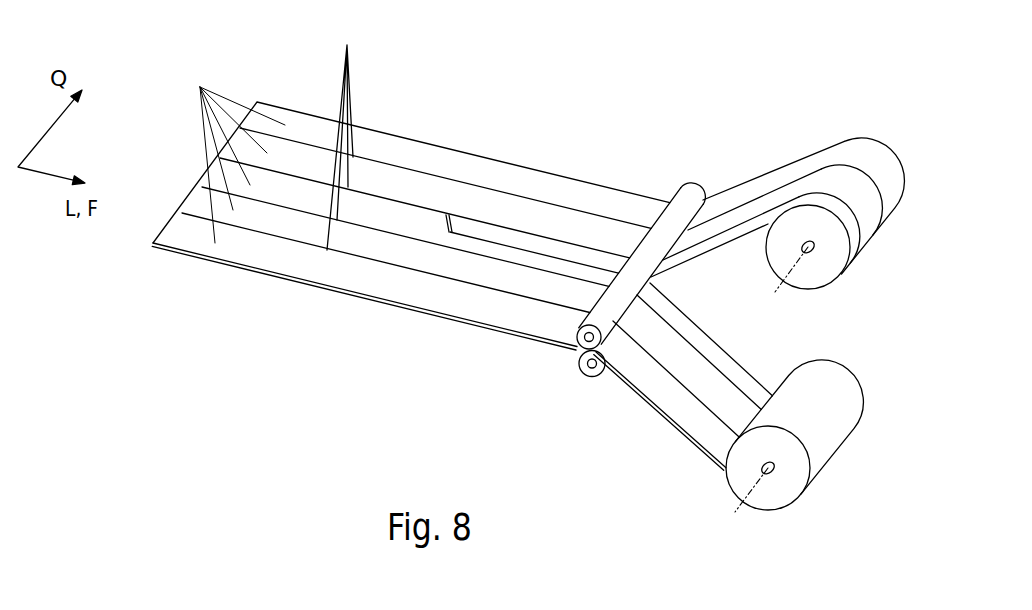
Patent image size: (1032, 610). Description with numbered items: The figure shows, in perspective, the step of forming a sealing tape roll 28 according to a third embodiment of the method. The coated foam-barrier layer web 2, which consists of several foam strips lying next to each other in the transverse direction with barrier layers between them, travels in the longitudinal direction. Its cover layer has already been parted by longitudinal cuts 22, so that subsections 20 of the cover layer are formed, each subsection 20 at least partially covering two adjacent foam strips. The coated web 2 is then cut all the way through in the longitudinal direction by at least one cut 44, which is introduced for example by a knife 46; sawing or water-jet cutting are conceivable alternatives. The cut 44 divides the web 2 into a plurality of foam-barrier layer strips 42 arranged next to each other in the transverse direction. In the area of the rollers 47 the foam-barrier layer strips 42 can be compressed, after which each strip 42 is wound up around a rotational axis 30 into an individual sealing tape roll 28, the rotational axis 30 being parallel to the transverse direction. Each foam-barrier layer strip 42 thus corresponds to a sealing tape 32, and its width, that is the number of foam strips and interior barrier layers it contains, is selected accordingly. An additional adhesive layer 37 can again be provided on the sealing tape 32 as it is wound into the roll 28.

The foam-barrier layer web 2 is at (423, 117).
The subsection of cover layer 20 is at (200, 87).
The cut 22 is at (349, 44).
The sealing tape roll 28 is at (840, 265).
The rotational axis 30 is at (782, 282).
The sealing tape 32 is at (757, 190).
The adhesive layer 37 is at (833, 437).
The foam-barrier layer strip 42 is at (627, 215).
The cut 44 is at (548, 255).
The knife 46 is at (447, 215).
The rollers 47 is at (586, 373).